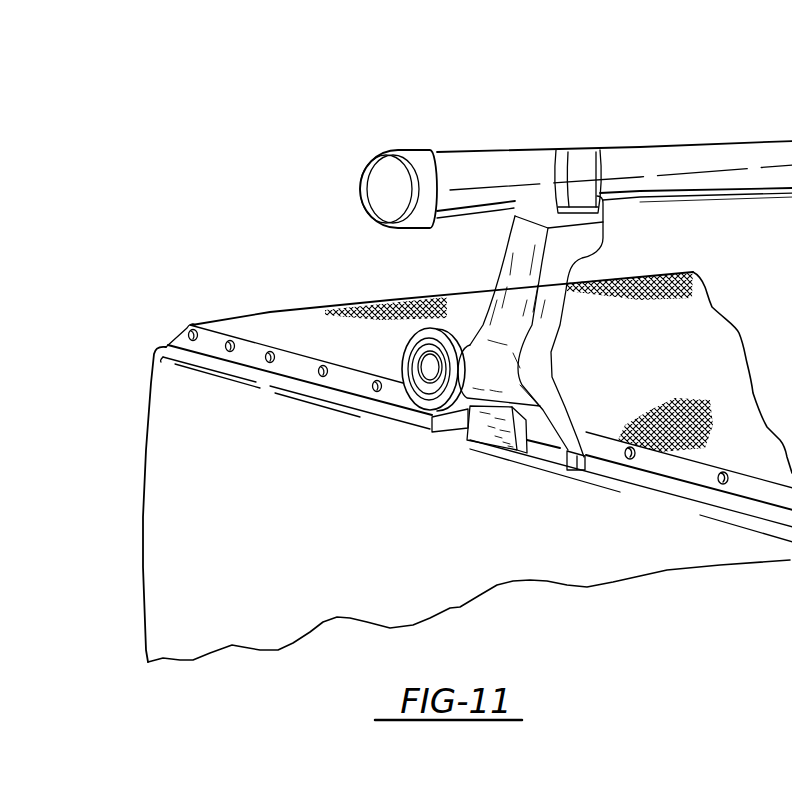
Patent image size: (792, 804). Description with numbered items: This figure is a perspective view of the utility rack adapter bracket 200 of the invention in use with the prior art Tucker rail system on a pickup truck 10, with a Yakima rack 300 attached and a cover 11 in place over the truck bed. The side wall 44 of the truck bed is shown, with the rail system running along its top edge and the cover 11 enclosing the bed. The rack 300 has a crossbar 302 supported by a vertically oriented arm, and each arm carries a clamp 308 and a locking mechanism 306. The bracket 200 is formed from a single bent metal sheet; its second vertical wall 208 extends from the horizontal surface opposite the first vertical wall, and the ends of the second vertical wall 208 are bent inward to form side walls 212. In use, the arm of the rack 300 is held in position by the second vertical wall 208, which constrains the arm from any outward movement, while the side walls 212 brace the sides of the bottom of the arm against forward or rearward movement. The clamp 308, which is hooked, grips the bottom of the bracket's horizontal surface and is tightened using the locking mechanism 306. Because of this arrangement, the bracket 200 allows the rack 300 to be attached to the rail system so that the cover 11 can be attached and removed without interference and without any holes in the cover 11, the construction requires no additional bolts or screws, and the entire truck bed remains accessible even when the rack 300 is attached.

The pickup truck 10 is at (120, 481).
The cover 11 is at (322, 328).
The side wall of the truck bed 44 is at (136, 570).
The bracket 200 is at (549, 480).
The second vertical wall 208 is at (542, 457).
The side walls 212 is at (578, 467).
The rack 300 is at (642, 129).
The crossbar 302 is at (740, 152).
The locking mechanism 306 is at (472, 352).
The clamp 308 is at (480, 443).